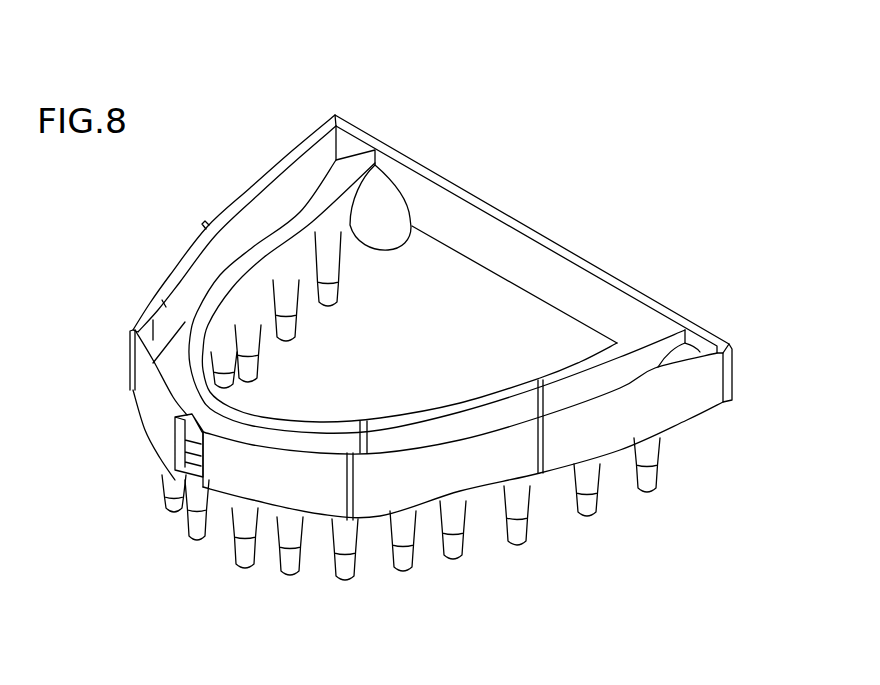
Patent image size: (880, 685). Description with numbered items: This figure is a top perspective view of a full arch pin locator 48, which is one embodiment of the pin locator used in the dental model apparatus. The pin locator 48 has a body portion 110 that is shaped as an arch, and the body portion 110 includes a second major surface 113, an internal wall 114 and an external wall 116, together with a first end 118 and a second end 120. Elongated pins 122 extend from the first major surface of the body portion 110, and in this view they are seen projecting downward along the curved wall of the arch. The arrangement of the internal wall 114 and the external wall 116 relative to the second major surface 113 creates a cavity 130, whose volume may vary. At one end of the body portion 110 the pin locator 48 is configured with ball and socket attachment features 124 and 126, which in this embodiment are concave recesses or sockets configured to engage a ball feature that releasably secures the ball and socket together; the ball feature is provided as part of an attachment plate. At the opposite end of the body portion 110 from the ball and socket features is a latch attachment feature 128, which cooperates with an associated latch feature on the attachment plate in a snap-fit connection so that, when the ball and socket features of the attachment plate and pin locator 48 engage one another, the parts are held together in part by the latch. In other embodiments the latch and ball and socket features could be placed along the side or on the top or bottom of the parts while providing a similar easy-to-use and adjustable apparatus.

The pin locator 48 is at (606, 166).
The body portion 110 is at (262, 402).
The second major surface 113 is at (187, 323).
The internal wall 114 is at (318, 228).
The external wall 116 is at (142, 412).
The first end 118 is at (236, 487).
The second end 120 is at (501, 200).
The elongated pins 122 is at (247, 530).
The ball and socket attachment feature 124 is at (707, 413).
The ball and socket attachment feature 126 is at (397, 233).
The latch attachment feature 128 is at (183, 447).
The cavity 130 is at (204, 272).